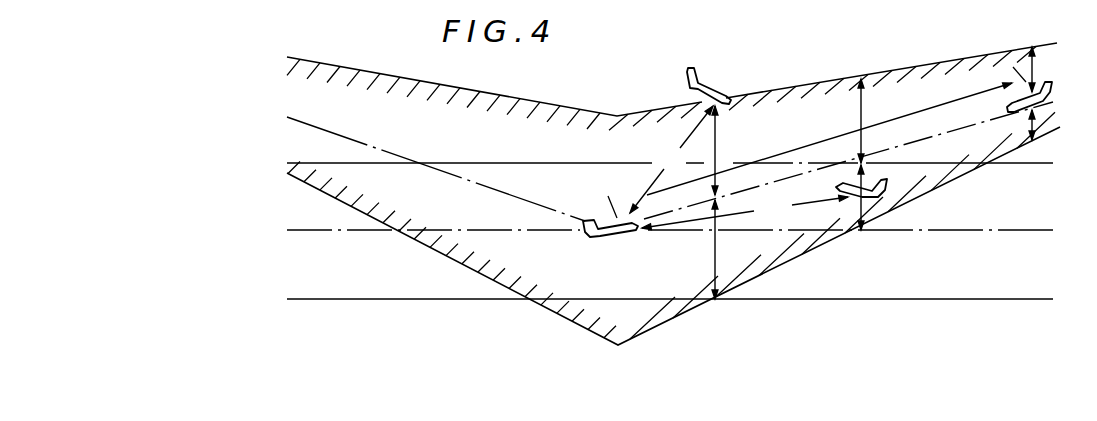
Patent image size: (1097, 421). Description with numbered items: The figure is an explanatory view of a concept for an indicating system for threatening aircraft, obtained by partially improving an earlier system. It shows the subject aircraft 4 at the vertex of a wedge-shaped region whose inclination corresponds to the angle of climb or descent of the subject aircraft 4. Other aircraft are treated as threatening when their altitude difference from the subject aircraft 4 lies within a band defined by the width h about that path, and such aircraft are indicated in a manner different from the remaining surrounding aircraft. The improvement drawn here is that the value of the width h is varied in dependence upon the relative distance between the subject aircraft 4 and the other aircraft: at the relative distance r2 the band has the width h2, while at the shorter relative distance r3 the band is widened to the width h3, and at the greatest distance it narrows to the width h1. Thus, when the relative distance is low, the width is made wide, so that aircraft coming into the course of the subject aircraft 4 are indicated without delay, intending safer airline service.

The subject aircraft 4 is at (590, 236).
The width h is at (829, 139).
The width h1 is at (1041, 93).
The width h2 is at (871, 154).
The width h3 is at (724, 202).
The relative distance r2 is at (745, 211).
The relative distance r3 is at (671, 159).